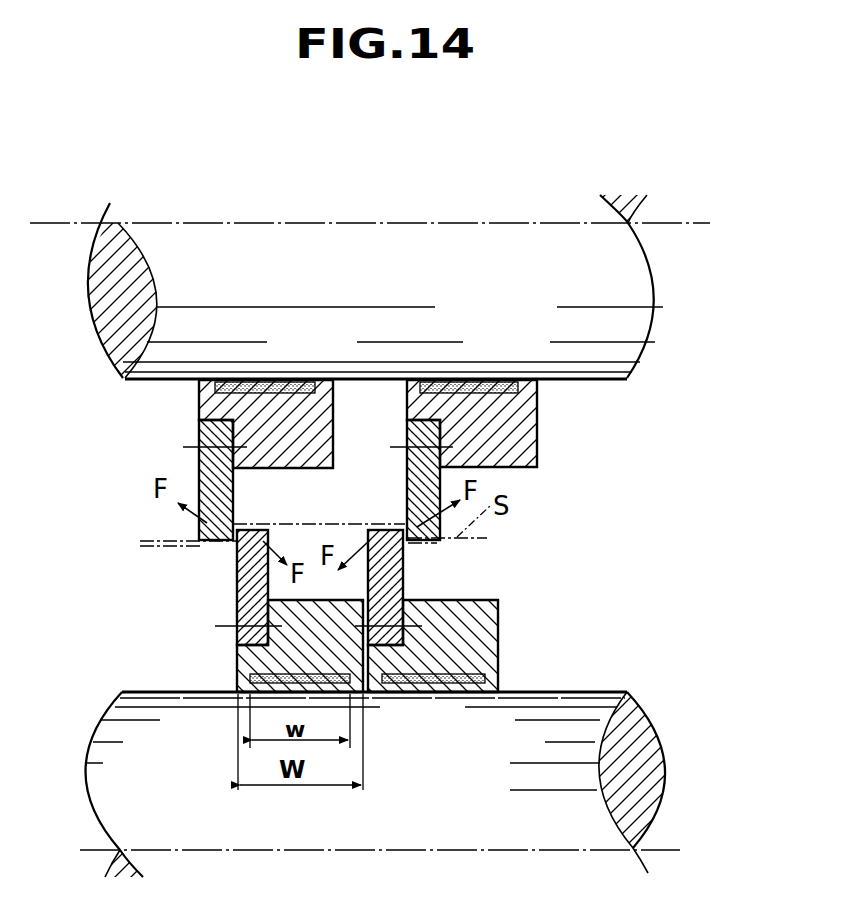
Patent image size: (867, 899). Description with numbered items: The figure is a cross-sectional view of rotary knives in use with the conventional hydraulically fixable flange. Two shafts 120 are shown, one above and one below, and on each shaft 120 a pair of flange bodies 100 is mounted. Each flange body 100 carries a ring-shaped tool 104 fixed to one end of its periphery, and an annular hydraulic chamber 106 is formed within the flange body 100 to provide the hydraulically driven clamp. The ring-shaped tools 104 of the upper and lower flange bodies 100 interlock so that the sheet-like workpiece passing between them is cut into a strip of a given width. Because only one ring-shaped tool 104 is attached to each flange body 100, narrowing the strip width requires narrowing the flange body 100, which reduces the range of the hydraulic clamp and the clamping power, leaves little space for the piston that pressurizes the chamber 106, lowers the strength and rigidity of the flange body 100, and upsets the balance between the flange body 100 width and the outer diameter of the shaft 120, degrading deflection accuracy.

The flange body 100 is at (325, 414).
The ring-shaped tool 104 is at (198, 467).
The annular hydraulic chamber 106 is at (278, 390).
The shaft 120 is at (642, 318).